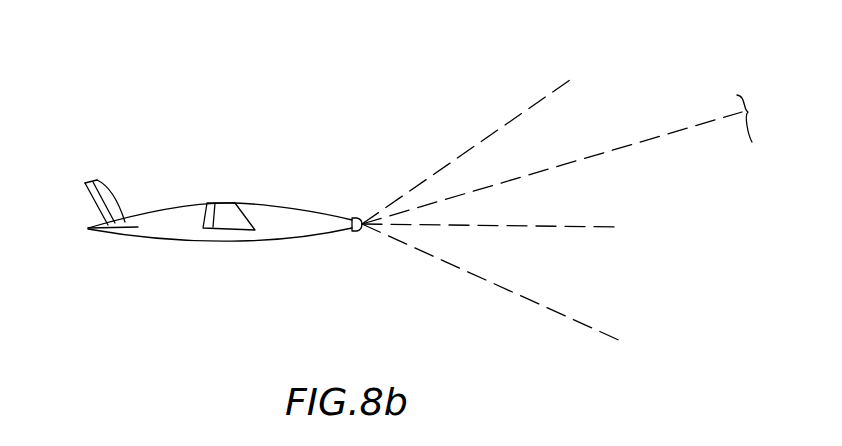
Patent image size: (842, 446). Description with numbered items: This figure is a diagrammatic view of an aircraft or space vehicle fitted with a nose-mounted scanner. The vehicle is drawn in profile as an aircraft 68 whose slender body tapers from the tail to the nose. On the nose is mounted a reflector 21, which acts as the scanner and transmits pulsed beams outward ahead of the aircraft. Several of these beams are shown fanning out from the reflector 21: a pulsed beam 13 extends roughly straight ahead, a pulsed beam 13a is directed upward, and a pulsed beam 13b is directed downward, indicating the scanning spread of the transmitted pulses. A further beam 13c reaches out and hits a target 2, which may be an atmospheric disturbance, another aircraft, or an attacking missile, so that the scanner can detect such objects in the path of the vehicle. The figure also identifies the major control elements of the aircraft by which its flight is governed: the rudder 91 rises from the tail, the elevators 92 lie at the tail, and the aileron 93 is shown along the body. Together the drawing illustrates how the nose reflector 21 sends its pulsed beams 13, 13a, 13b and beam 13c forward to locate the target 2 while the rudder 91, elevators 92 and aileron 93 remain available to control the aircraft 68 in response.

The target 2 is at (772, 112).
The pulsed beam 13 is at (545, 224).
The pulsed beam 13a is at (495, 130).
The pulsed beam 13b is at (469, 276).
The beam 13c is at (636, 143).
The reflector 21 is at (357, 233).
The aircraft fuselage 68 is at (291, 208).
The rudder 91 is at (92, 199).
The elevators 92 is at (93, 229).
The aileron 93 is at (203, 215).